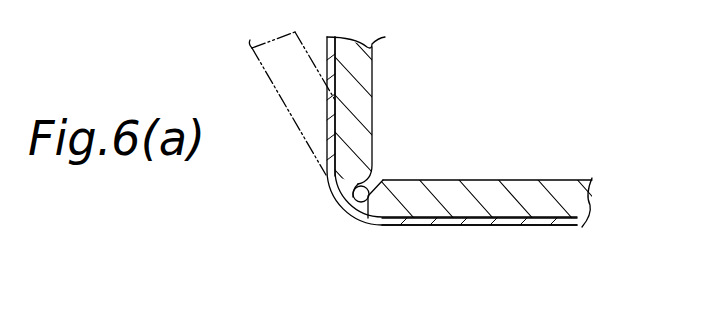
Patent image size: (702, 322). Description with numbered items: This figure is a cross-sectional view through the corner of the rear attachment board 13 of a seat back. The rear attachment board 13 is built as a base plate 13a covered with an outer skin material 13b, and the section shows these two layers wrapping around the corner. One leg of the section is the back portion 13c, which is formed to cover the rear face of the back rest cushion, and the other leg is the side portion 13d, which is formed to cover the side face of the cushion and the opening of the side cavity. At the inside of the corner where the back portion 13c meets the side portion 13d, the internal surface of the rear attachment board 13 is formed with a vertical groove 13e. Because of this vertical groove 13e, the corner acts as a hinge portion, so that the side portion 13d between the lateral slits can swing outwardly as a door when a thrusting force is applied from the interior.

The rear attachment board 13 is at (540, 227).
The base plate 13a is at (486, 192).
The outer skin material 13b is at (335, 92).
The back portion 13c is at (443, 225).
The side portion 13d is at (332, 125).
The vertical groove 13e is at (365, 200).